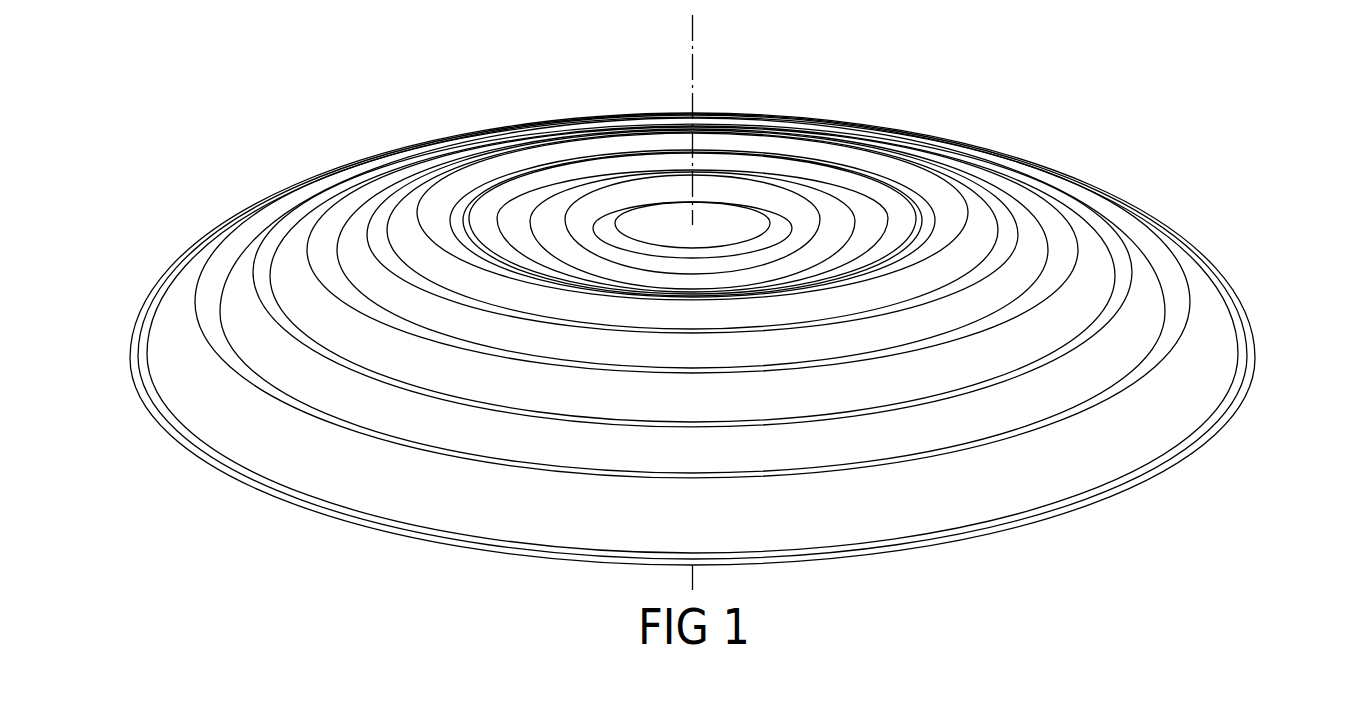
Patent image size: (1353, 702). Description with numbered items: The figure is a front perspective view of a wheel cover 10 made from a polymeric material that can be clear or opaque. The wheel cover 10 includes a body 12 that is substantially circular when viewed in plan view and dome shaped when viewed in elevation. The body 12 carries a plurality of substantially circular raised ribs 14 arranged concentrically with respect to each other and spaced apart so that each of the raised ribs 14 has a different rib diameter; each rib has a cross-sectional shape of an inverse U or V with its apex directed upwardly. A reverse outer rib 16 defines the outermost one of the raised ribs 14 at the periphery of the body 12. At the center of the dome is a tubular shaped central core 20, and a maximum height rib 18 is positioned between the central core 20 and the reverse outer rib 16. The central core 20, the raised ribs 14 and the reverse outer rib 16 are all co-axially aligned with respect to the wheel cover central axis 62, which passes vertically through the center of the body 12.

The wheel cover 10 is at (1040, 128).
The body 12 is at (243, 305).
The raised ribs 14 is at (1078, 242).
The reverse outer rib 16 is at (1243, 331).
The maximum height rib 18 is at (433, 190).
The central core 20 is at (643, 220).
The wheel cover central axis 62 is at (700, 40).